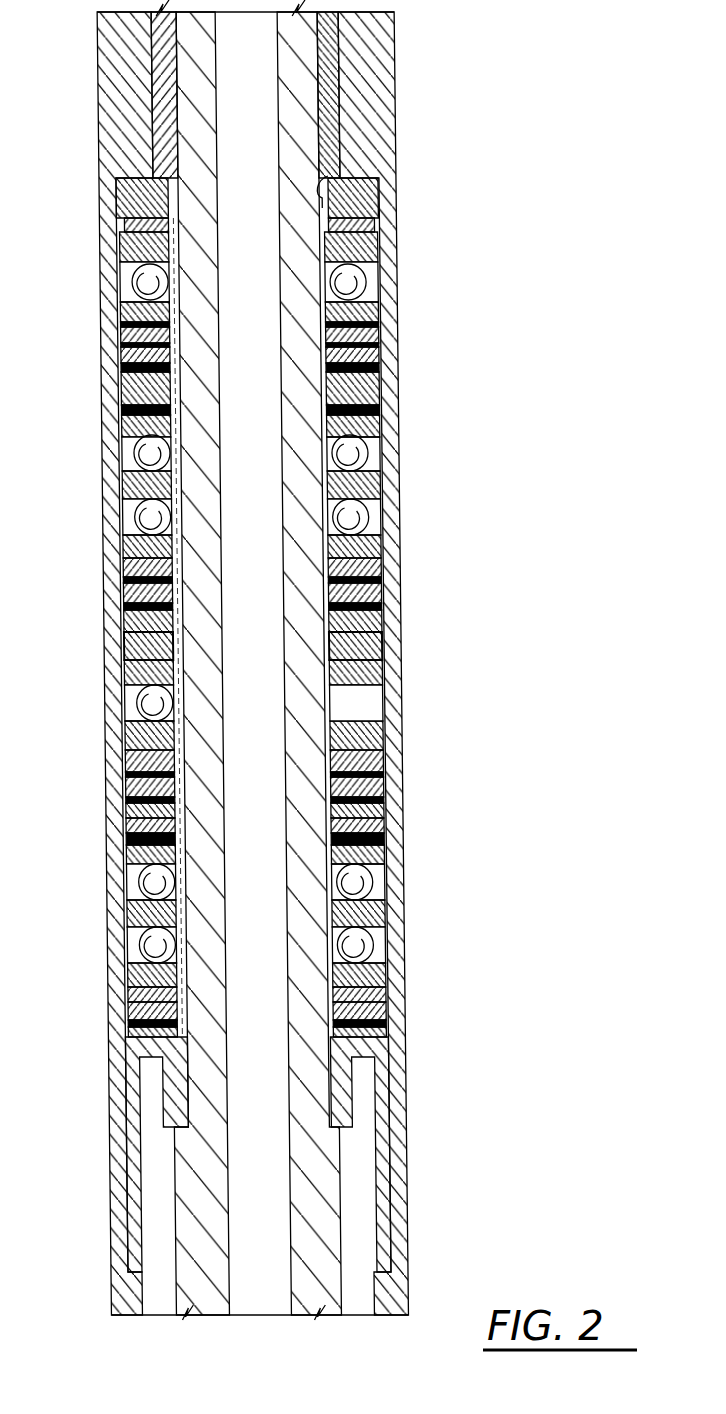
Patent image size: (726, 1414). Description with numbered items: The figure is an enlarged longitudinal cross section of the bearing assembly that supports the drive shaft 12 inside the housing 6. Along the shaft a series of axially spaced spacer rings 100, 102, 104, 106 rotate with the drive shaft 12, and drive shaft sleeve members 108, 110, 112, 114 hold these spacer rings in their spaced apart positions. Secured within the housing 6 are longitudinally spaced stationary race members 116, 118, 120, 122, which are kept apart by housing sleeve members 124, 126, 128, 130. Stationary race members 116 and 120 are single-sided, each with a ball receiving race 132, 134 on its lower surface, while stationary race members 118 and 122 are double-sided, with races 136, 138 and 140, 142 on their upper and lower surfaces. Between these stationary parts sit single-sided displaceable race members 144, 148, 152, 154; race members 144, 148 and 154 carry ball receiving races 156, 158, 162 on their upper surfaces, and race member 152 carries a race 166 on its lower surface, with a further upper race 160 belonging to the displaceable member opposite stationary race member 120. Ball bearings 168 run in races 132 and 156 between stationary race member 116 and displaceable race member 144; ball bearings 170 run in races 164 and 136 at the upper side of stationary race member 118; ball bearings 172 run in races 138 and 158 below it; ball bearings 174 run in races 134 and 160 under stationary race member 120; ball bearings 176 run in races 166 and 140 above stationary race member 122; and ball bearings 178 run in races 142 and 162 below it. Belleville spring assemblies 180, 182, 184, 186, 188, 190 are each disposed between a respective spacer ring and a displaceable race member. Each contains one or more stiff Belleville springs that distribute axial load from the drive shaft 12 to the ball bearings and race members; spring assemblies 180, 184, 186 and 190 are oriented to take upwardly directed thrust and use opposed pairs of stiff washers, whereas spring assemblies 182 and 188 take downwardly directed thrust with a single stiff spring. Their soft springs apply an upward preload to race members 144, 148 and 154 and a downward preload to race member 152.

The housing 6 is at (104, 82).
The drive shaft 12 is at (188, 125).
The drive shaft sleeve member 108 is at (325, 182).
The stationary race member 116 is at (388, 238).
The ball receiving race 132 is at (358, 266).
The ball receiving race 156 is at (375, 284).
The displaceable race member 144 is at (378, 307).
The housing sleeve member 124 is at (378, 331).
The spacer ring 100 is at (387, 384).
The drive shaft sleeve member 110 is at (378, 418).
The ball receiving race 140 is at (376, 432).
The ball receiving race 164 is at (360, 449).
The ball receiving race 136 is at (386, 472).
The stationary race member 118 is at (384, 506).
The ball receiving race 138 is at (362, 516).
The ball receiving race 158 is at (382, 544).
The displaceable race member 148 is at (386, 554).
The housing sleeve member 126 is at (384, 566).
The spacer ring 102 is at (386, 621).
The drive shaft sleeve member 112 is at (387, 660).
The stationary race member 120 is at (382, 680).
The ball receiving race 134 is at (362, 706).
The ball receiving race 160 is at (376, 722).
The housing sleeve member 128 is at (380, 753).
The spacer ring 104 is at (388, 798).
The drive shaft sleeve member 114 is at (384, 838).
The displaceable race member 152 is at (381, 860).
The ball receiving race 166 is at (364, 882).
The stationary race member 122 is at (386, 920).
The ball receiving race 142 is at (376, 942).
The ball receiving race 162 is at (381, 966).
The displaceable race member 154 is at (386, 980).
The housing sleeve member 130 is at (388, 991).
The spacer ring 106 is at (386, 1048).
The ball bearings 168 is at (140, 282).
The Belleville spring assembly 180 is at (125, 352).
The Belleville spring assembly 182 is at (125, 411).
The ball bearings 170 is at (140, 455).
The ball bearings 172 is at (140, 519).
The Belleville spring assembly 184 is at (125, 591).
The ball bearings 174 is at (140, 707).
The Belleville spring assembly 186 is at (125, 777).
The Belleville spring assembly 188 is at (125, 836).
The ball bearings 176 is at (140, 886).
The ball bearings 178 is at (140, 947).
The Belleville spring assembly 190 is at (125, 1013).